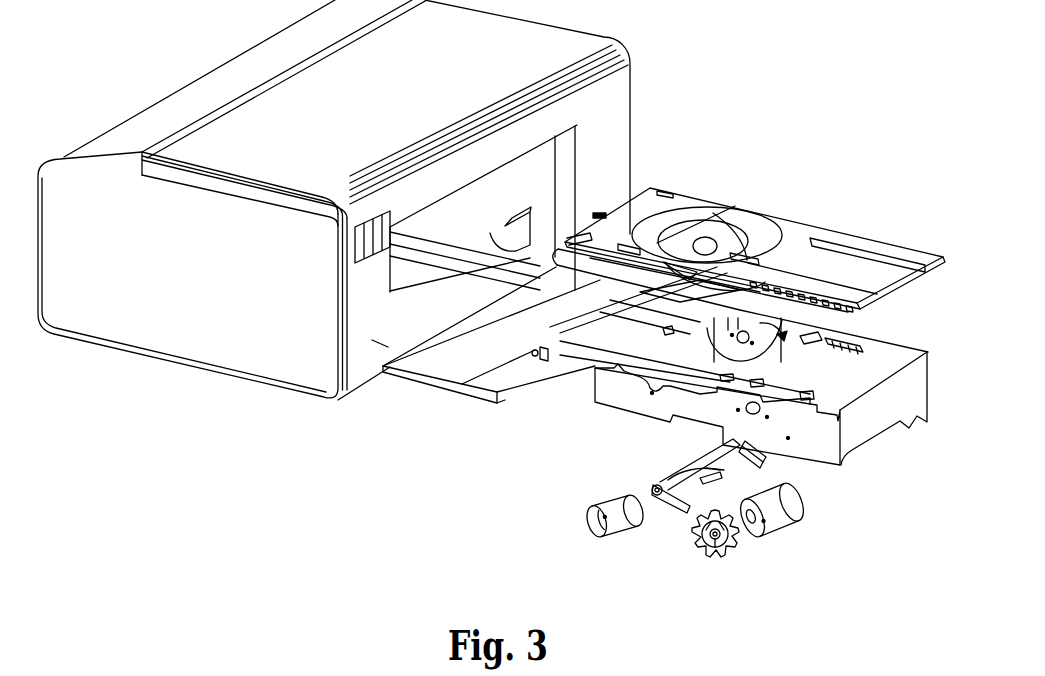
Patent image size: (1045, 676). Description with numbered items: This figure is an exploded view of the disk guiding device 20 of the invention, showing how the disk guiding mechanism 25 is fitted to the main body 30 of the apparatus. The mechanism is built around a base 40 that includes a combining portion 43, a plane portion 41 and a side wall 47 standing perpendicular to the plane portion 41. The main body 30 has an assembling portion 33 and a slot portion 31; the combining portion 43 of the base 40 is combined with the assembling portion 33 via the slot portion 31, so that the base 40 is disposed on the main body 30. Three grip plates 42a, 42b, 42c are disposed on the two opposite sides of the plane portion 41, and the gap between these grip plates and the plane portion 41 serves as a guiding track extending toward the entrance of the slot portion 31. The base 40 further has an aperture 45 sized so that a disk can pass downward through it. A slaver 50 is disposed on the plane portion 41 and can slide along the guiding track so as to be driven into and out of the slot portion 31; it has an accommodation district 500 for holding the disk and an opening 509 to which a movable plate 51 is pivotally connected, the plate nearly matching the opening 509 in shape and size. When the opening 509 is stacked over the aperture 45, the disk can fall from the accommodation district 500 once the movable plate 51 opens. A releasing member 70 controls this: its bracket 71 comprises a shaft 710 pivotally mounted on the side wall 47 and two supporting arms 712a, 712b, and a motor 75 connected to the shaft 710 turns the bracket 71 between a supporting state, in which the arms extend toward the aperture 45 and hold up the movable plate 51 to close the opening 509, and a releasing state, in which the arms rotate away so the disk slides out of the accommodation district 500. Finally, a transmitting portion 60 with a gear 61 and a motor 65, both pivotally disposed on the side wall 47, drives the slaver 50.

The printer 20 is at (844, 21).
The tray unit 25 is at (809, 182).
The main body 30 is at (230, 90).
The slot portion 31 is at (390, 309).
The assembling portion 33 is at (520, 213).
The base 40 is at (887, 408).
The plane portion 41 is at (890, 357).
The grip plate 42a is at (657, 290).
The grip plate 42b is at (567, 342).
The grip plate 42c is at (774, 390).
The combining portion 43 is at (534, 358).
The aperture 45 is at (848, 306).
The side wall 47 is at (823, 458).
The slaver 50 is at (881, 246).
The movable plate 51 is at (738, 213).
The accommodation district 500 is at (695, 221).
The opening 509 is at (756, 231).
The transmitting portion 60 is at (782, 546).
The gear 61 is at (733, 552).
The motor 65 is at (745, 531).
The releasing member 70 is at (603, 446).
The bracket 71 is at (667, 483).
The motor 75 is at (618, 497).
The shaft 710 is at (697, 471).
The supporting arm 712a is at (706, 476).
The supporting arm 712b is at (742, 460).